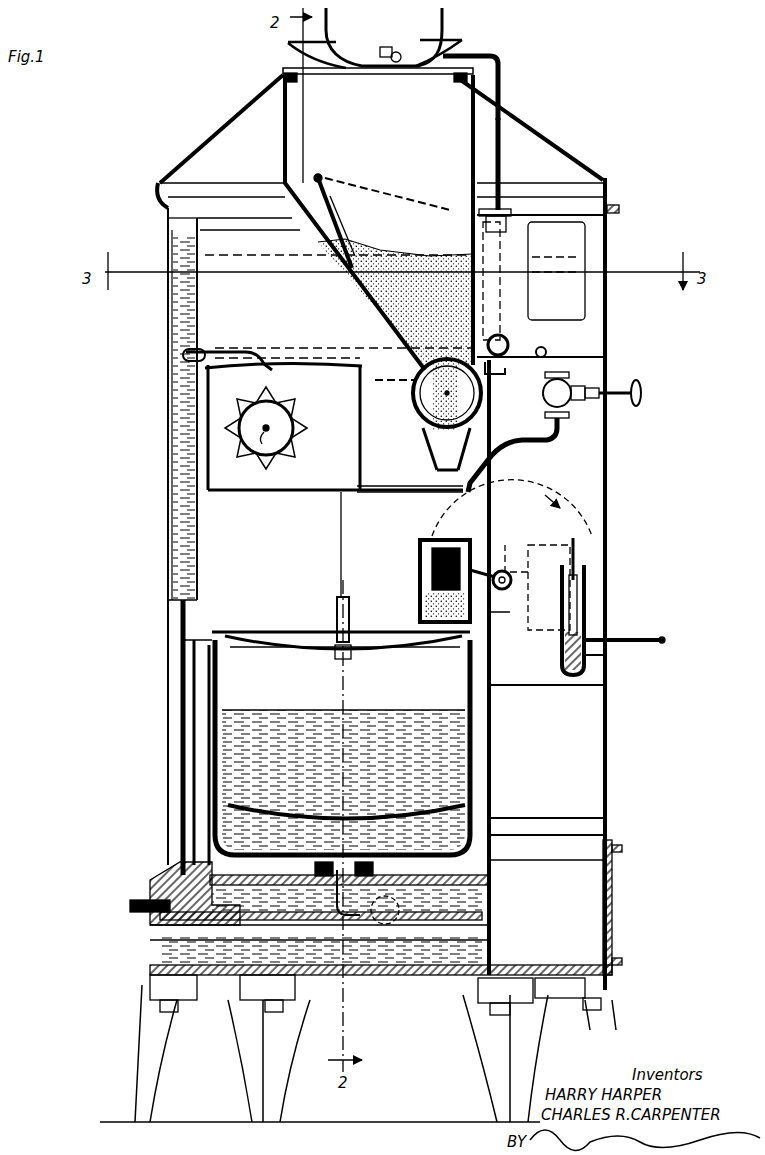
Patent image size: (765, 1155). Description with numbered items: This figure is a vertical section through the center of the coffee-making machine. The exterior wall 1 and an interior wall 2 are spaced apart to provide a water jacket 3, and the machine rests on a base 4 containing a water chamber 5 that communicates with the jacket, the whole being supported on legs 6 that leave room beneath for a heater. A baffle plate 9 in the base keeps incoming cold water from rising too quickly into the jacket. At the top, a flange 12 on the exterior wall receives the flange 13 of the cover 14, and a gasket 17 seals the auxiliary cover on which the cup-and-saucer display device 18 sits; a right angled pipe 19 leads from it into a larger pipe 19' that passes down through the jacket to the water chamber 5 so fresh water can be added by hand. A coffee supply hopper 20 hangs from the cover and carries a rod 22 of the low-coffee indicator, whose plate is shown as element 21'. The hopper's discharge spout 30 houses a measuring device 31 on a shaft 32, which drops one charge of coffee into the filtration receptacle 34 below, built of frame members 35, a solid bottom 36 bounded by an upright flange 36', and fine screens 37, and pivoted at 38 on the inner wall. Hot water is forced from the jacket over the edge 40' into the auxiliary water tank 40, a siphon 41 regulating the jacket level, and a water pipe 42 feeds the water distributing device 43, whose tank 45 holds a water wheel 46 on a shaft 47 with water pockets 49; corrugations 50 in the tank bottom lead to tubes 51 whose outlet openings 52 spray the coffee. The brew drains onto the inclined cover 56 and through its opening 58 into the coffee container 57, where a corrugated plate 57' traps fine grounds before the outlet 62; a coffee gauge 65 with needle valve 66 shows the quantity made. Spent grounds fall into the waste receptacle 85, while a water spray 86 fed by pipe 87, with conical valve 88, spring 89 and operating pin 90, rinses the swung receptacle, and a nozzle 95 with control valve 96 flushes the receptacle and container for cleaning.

The exterior wall 1 is at (198, 512).
The interior wall 2 is at (195, 540).
The water jacket 3 is at (183, 562).
The base 4 is at (612, 888).
The water chamber 5 is at (492, 898).
The legs 6 is at (575, 1024).
The baffle plate 9 is at (428, 940).
The flange 12 is at (158, 203).
The flange 13 is at (610, 181).
The cover 14 is at (540, 132).
The gasket 17 is at (460, 80).
The display device 18 is at (433, 20).
The right angled pipe 19 is at (481, 65).
The pipe 19' is at (513, 236).
The coffee supply hopper 20 is at (283, 140).
The flap 21' is at (384, 223).
The rod 22 is at (321, 174).
The discharge spout 30 is at (425, 440).
The measuring device 31 is at (430, 394).
The shaft 32 is at (408, 388).
The filtration receptacle 34 is at (420, 567).
The frame members 35 is at (424, 547).
The solid bottom 36 is at (430, 617).
The upright flange 36' is at (426, 604).
The screens 37 is at (440, 576).
The pivot 38 is at (503, 572).
The auxiliary water tank 40 is at (567, 294).
The edge 40' is at (516, 211).
The siphon 41 is at (575, 296).
The water pipe 42 is at (231, 352).
The water distributing device 43 is at (293, 362).
The tank 45 is at (318, 492).
The water wheel 46 is at (290, 415).
The shaft 47 is at (273, 440).
The water pockets 49 is at (226, 432).
The corrugations 50 is at (335, 493).
The tubes 51 is at (400, 486).
The outlet openings 52 is at (450, 490).
The cover 56 is at (268, 634).
The coffee container 57 is at (289, 747).
The corrugated plate 57' is at (343, 766).
The opening 58 is at (349, 658).
The outlet 62 is at (372, 880).
The coffee gauge 65 is at (178, 773).
The needle valve 66 is at (142, 920).
The waste receptacle 85 is at (596, 772).
The water spray 86 is at (592, 605).
The pipe 87 is at (656, 634).
The conical valve 88 is at (578, 612).
The spring 89 is at (586, 644).
The operating pin 90 is at (580, 555).
The nozzle 95 is at (505, 455).
The control valve 96 is at (575, 412).